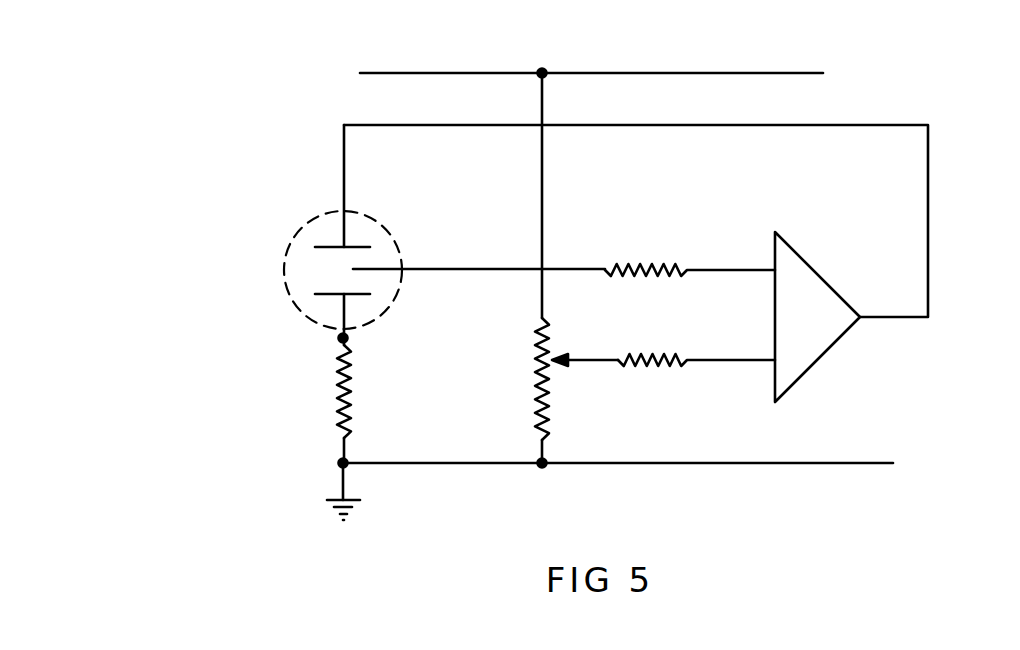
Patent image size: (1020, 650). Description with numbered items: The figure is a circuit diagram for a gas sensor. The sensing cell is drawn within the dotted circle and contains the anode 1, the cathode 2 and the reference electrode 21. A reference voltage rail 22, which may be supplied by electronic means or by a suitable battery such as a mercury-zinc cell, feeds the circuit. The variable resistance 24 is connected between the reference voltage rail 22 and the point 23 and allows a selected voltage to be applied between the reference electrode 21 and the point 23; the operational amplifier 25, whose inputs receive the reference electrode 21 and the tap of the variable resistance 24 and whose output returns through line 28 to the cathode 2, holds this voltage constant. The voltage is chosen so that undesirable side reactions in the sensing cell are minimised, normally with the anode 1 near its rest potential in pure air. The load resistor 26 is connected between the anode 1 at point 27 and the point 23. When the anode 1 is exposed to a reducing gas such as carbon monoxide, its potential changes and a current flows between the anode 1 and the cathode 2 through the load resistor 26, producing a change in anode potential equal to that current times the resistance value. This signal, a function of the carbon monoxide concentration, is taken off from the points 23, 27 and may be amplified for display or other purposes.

The anode 1 is at (335, 295).
The cathode 2 is at (327, 247).
The reference electrode 21 is at (355, 269).
The reference voltage rail 22 is at (407, 73).
The point 23 is at (340, 465).
The variable resistance 24 is at (547, 403).
The operational amplifier 25 is at (815, 295).
The load resistor 26 is at (337, 390).
The point 27 is at (343, 338).
The feedback line 28 is at (843, 125).